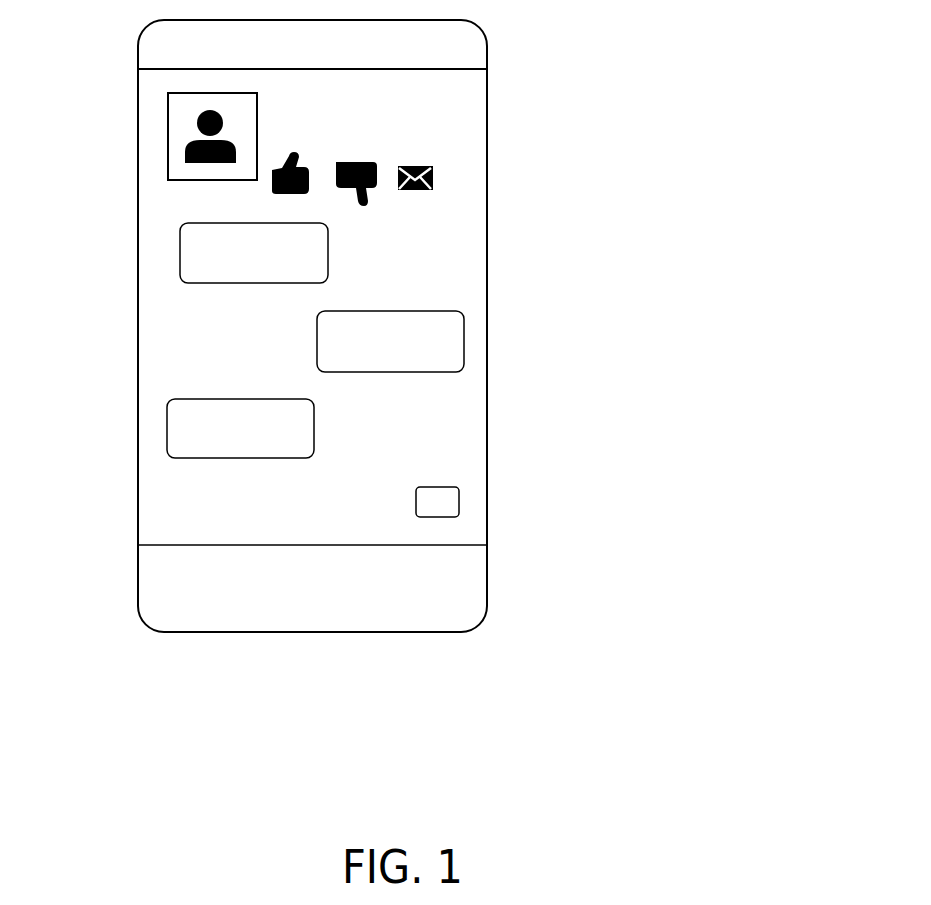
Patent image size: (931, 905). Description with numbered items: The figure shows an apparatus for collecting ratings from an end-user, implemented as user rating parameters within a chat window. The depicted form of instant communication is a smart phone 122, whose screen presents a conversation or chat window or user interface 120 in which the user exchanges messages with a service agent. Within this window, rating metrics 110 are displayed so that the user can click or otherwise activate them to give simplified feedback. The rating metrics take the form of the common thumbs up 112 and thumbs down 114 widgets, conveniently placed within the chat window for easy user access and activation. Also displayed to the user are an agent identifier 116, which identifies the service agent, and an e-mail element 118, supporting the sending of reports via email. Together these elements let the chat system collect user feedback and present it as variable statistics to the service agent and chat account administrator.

The rating metrics 110 is at (404, 137).
The thumbs up 112 is at (303, 195).
The thumbs down 114 is at (356, 210).
The agent identifier 116 is at (343, 100).
The e-mail element 118 is at (434, 167).
The chat window or user interface 120 is at (423, 451).
The smart phone 122 is at (138, 443).